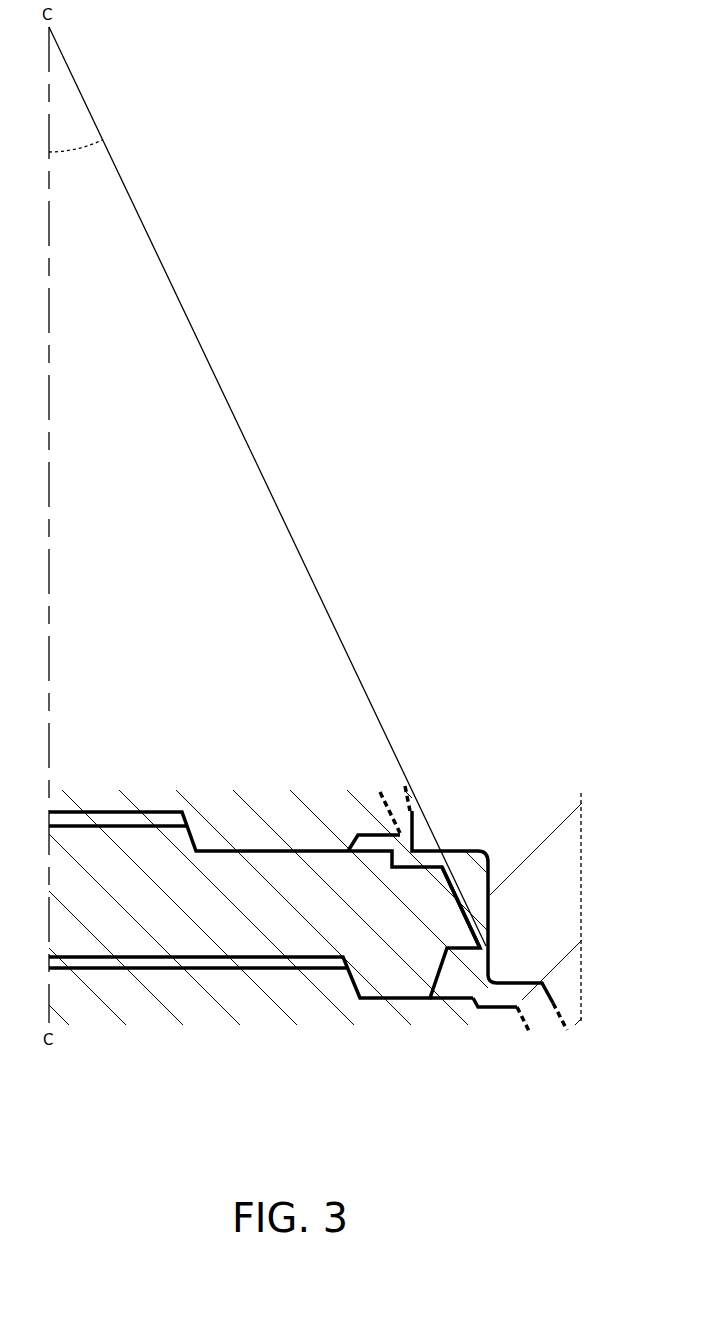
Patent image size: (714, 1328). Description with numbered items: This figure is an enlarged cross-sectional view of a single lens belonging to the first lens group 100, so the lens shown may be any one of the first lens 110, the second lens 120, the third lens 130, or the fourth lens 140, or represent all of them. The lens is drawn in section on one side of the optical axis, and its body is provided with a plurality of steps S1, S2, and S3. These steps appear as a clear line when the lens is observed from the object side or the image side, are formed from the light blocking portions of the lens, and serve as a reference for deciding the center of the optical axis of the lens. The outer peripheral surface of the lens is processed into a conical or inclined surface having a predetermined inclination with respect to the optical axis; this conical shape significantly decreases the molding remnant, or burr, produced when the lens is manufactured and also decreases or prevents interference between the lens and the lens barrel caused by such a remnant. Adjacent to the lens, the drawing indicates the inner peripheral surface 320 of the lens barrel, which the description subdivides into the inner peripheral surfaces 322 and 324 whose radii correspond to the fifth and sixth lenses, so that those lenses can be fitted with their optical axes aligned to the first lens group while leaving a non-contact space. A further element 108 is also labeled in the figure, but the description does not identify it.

The first lens group 100 is at (350, 961).
The first lens 110 is at (108, 961).
The second lens 120 is at (179, 961).
The third lens 130 is at (348, 961).
The fourth lens 140 is at (519, 961).
The lens barrel portion 108 is at (488, 854).
The inner peripheral surface of the lens barrel 320 is at (533, 1063).
The inner peripheral surface 322 is at (545, 1040).
The inner peripheral surface 324 is at (546, 1063).
The step S1 is at (400, 830).
The step S2 is at (443, 862).
The step S3 is at (446, 1000).